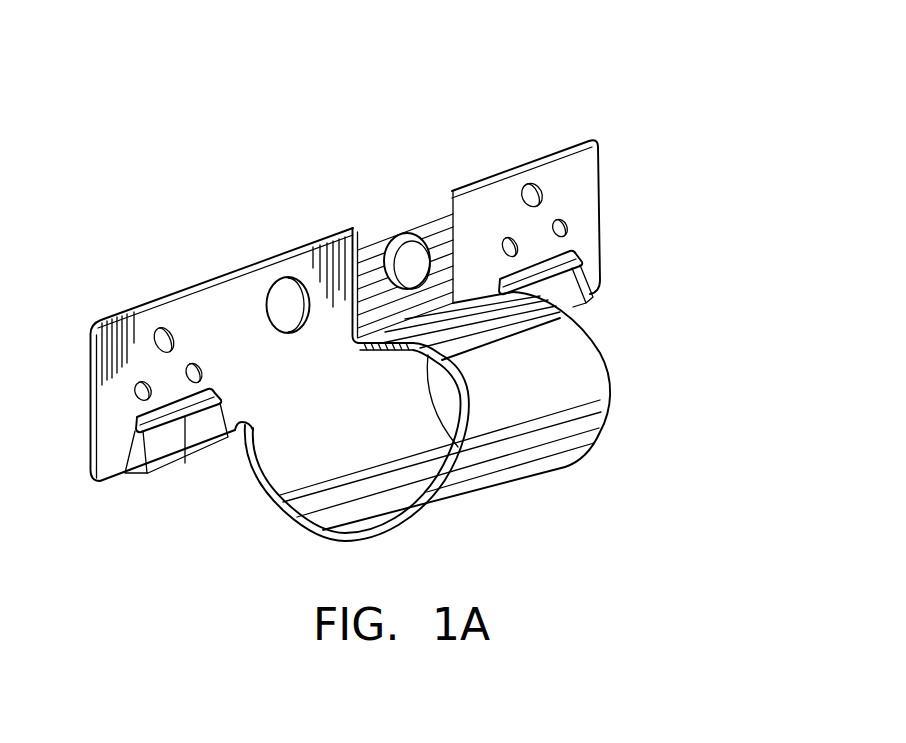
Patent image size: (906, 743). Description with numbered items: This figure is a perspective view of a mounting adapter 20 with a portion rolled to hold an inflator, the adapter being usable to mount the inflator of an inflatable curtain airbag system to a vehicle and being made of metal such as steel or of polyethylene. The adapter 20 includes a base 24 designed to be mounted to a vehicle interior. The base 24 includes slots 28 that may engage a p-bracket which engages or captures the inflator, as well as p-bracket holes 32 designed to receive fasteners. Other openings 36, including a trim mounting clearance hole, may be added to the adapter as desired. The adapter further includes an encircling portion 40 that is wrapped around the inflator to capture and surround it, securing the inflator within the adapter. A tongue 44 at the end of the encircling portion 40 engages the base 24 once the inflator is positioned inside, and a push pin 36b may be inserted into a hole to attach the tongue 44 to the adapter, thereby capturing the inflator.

The mounting adapter 20 is at (416, 315).
The base 24 is at (572, 178).
The slots 28 is at (185, 463).
The p-bracket holes 32 is at (172, 328).
The openings 36 is at (288, 280).
The push pin 36b is at (413, 263).
The encircling portion 40 is at (612, 380).
The tongue 44 is at (353, 338).